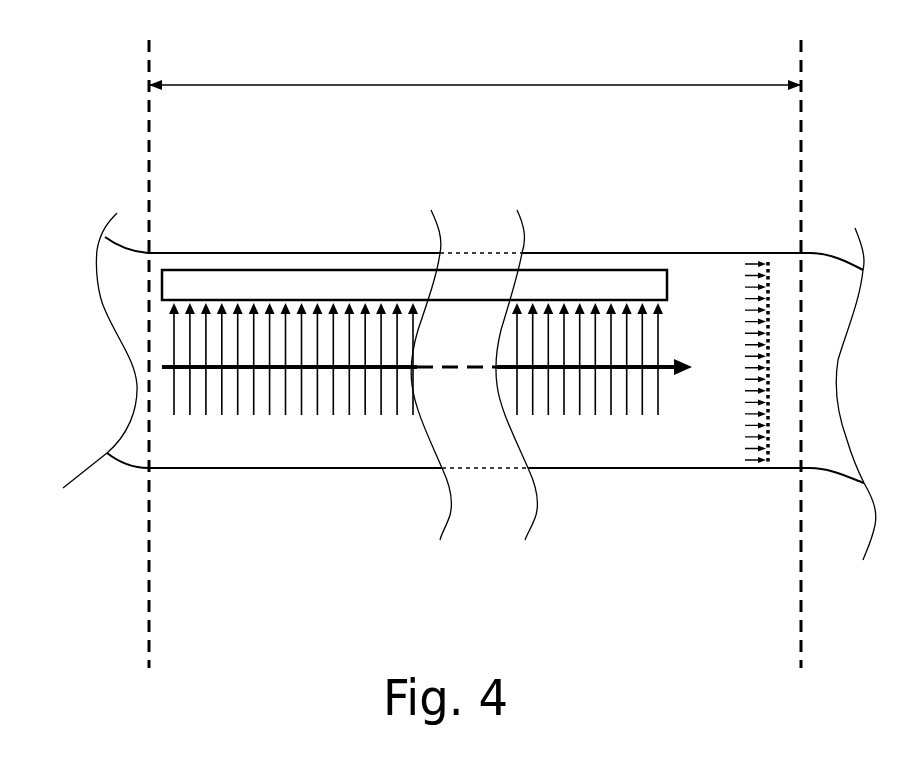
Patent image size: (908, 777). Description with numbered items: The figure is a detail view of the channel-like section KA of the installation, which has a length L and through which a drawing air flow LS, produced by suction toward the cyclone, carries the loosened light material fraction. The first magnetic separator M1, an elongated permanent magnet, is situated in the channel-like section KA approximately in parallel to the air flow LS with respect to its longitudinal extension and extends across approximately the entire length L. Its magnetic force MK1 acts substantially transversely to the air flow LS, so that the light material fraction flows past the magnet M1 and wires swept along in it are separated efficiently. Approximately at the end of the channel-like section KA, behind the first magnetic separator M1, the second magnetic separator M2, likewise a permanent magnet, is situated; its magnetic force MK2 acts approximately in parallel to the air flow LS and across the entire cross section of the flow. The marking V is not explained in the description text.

The length L is at (475, 66).
The channel-like section KA is at (227, 470).
The first magnetic separator M1 is at (600, 283).
The second magnetic separator M2 is at (768, 287).
The magnetic force MK1 is at (285, 400).
The magnetic force MK2 is at (750, 372).
The air flow LS is at (577, 372).
The flow velocity / direction V is at (797, 355).